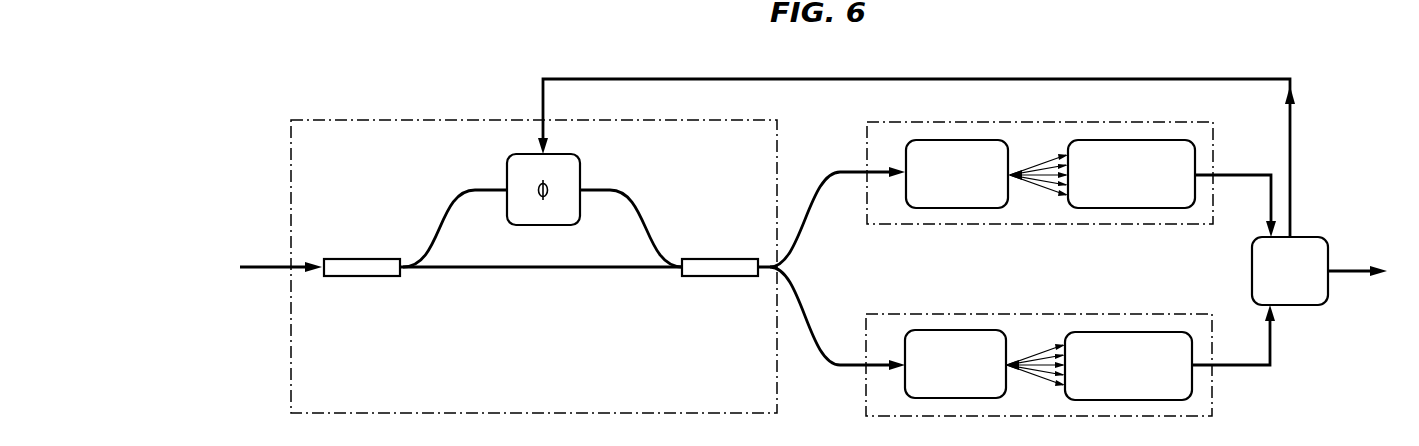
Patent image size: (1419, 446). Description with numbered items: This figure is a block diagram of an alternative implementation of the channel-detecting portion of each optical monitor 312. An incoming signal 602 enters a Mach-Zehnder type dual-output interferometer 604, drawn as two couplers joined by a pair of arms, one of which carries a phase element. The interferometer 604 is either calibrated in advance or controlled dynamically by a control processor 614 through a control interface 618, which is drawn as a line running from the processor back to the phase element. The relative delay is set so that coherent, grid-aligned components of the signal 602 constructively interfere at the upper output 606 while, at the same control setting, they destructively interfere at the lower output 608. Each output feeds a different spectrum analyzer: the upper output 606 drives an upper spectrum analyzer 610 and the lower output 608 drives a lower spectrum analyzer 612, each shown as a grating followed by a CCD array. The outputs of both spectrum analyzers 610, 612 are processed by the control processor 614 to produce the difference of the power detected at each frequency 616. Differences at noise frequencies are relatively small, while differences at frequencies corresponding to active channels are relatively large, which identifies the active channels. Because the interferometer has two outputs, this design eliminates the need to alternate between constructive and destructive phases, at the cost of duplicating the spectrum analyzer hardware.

The optical monitor (OMON) 312 is at (903, 56).
The signal 602 is at (253, 265).
The dual-output interferometer 604 is at (416, 119).
The upper output 606 is at (823, 183).
The lower output 608 is at (828, 357).
The upper spectrum analyzer 610 is at (1033, 121).
The lower spectrum analyzer 612 is at (1033, 314).
The control processor 614 is at (1305, 237).
The difference of the power detected at each frequency 616 is at (1347, 275).
The control interface 618 is at (645, 78).